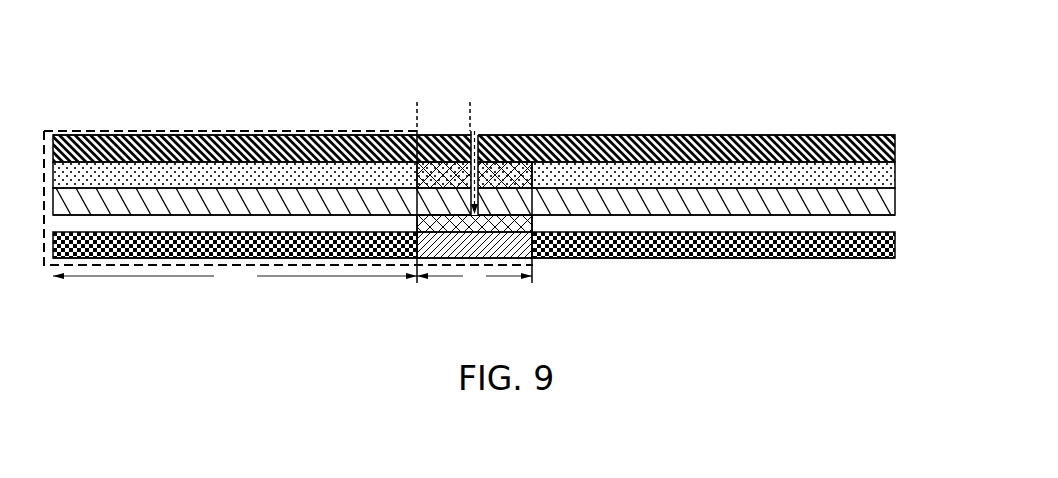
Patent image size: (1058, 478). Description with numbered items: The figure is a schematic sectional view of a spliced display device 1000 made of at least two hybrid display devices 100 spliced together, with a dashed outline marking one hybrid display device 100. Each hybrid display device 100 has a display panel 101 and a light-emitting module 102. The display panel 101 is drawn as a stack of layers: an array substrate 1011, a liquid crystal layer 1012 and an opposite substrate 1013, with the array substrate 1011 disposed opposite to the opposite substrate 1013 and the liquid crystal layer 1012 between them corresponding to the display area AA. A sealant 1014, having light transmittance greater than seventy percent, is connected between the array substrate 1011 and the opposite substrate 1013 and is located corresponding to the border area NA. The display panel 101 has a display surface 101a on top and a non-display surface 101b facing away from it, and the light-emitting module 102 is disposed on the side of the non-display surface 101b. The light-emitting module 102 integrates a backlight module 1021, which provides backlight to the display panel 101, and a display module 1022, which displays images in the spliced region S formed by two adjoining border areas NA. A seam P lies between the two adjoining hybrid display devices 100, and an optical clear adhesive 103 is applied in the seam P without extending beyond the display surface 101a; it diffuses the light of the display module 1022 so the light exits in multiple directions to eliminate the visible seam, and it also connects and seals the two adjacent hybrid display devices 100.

The spliced display device 1000 is at (106, 28).
The hybrid display device 100 is at (105, 119).
The display panel 101 is at (738, 85).
The array substrate 1011 is at (720, 198).
The liquid crystal layer 1012 is at (645, 186).
The opposite substrate 1013 is at (592, 137).
The sealant 1014 is at (508, 173).
The display surface 101a is at (893, 128).
The non-display surface 101b is at (893, 223).
The light-emitting module 102 is at (720, 305).
The backlight module 1021 is at (657, 260).
The display module 1022 is at (545, 260).
The optical clear adhesive 103 is at (417, 258).
The seam P is at (417, 258).
The border area NA is at (447, 158).
The display area AA is at (235, 277).
The spliced region S is at (474, 277).